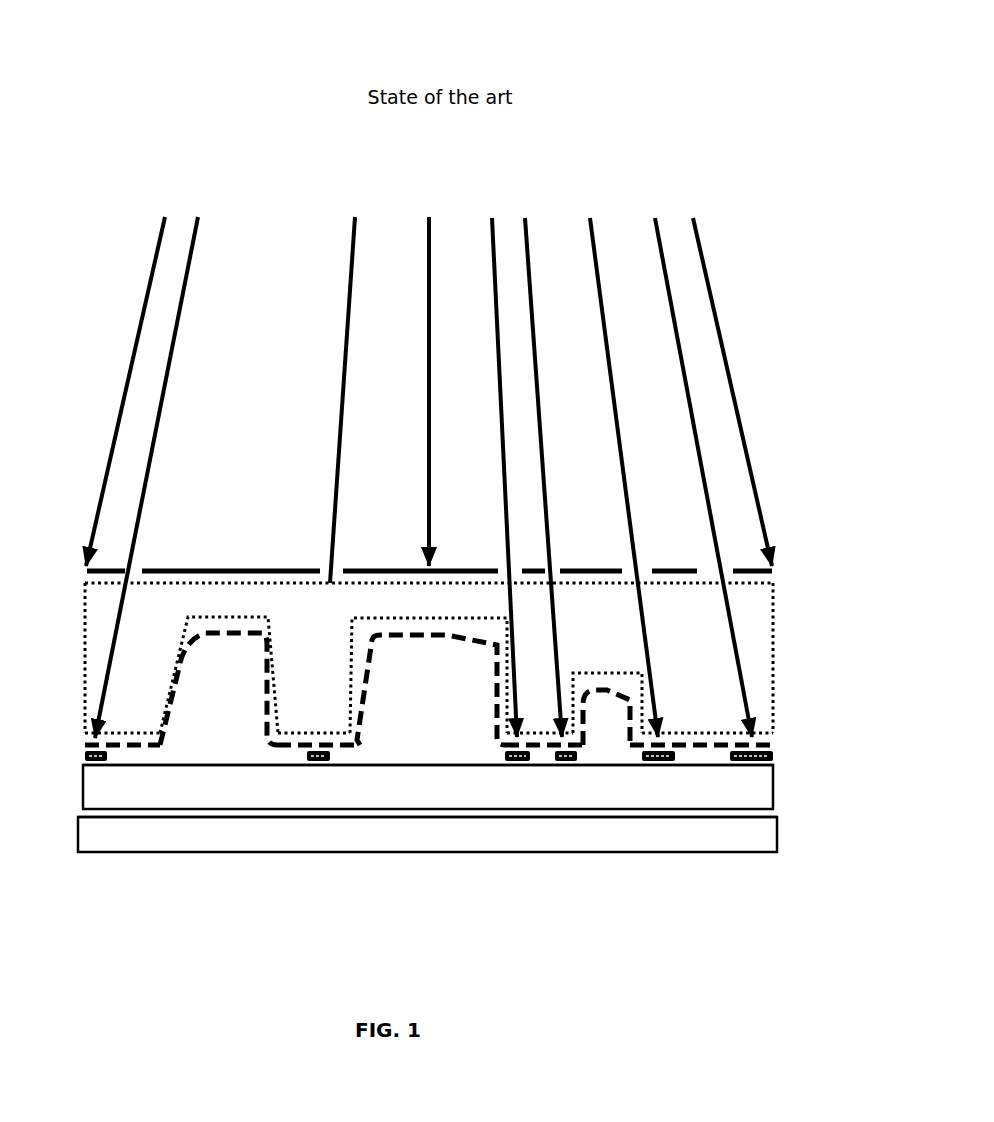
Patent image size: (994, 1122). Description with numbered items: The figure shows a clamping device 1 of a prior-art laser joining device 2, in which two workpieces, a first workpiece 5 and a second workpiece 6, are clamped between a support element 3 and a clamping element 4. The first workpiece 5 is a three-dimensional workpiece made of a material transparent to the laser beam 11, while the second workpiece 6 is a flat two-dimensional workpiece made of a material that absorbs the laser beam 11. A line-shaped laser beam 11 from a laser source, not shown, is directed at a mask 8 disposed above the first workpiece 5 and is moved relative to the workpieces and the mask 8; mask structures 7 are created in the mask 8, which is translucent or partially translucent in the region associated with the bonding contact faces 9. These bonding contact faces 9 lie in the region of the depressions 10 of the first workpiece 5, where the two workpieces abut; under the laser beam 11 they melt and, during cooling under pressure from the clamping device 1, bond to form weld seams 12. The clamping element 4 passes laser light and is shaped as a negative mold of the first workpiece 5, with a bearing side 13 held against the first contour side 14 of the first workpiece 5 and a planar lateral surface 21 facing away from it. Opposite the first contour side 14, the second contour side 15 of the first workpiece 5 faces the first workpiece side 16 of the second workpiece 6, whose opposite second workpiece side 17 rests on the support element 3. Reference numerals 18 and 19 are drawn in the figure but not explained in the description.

The clamping device 1 is at (70, 697).
The laser joining device 2 is at (117, 137).
The support element 3 is at (168, 829).
The clamping element 4 is at (97, 627).
The first workpiece 5 is at (178, 661).
The second workpiece 6 is at (690, 790).
The mask structures 7 is at (142, 560).
The mask 8 is at (797, 571).
The bonding contact faces 9 is at (152, 752).
The depressions 10 is at (338, 650).
The laser beam 11 is at (122, 345).
The weld seams 12 is at (98, 768).
The bearing side 13 is at (779, 744).
The first contour side 14 is at (595, 690).
The second contour side 15 is at (700, 762).
The first workpiece side 16 is at (615, 772).
The second workpiece side 17 is at (553, 816).
The opening in cover layer 18 is at (498, 561).
The protrusion 19 is at (238, 672).
The lateral surface 21 is at (678, 583).